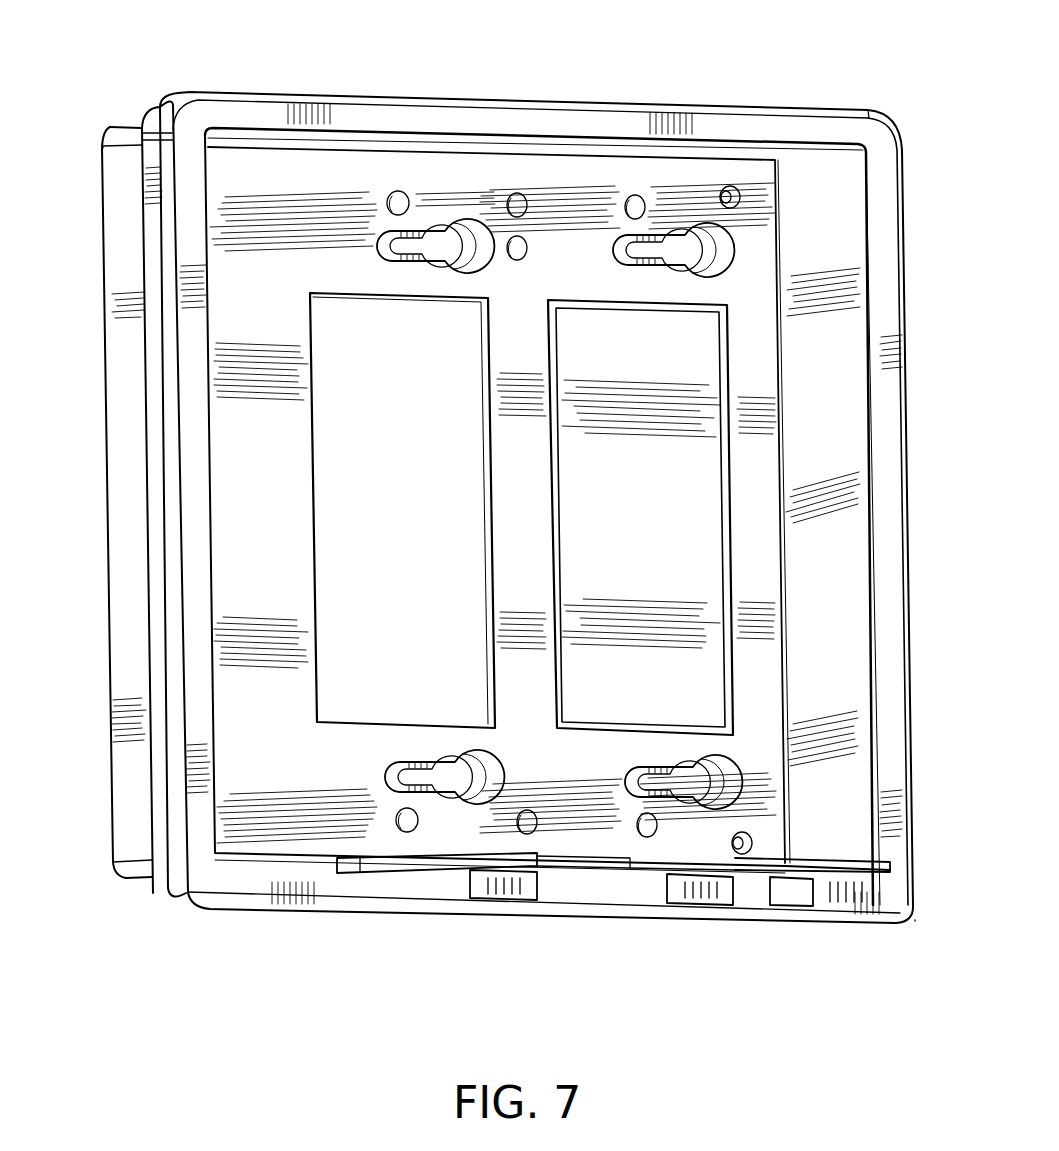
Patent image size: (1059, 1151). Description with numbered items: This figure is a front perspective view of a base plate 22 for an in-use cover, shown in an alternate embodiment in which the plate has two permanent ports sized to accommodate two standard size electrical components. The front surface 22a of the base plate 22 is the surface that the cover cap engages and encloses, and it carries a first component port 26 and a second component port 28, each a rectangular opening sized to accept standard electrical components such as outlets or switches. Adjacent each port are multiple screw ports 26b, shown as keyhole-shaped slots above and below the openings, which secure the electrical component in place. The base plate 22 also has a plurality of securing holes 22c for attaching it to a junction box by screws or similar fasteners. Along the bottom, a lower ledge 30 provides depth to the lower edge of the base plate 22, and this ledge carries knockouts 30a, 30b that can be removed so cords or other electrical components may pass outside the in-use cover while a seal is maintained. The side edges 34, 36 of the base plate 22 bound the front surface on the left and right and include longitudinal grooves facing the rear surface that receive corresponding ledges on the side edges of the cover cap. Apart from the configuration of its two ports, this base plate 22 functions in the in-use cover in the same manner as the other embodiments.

The base plate 22 is at (97, 66).
The front surface 22a is at (547, 504).
The securing holes 22c is at (731, 188).
The first component port 26 is at (402, 510).
The screw ports 26b is at (437, 227).
The second component port 28 is at (640, 517).
The lower ledge 30 is at (447, 870).
The knockout 30a is at (552, 872).
The knockout 30b is at (752, 876).
The side edge 34 is at (157, 503).
The side edge 36 is at (907, 496).